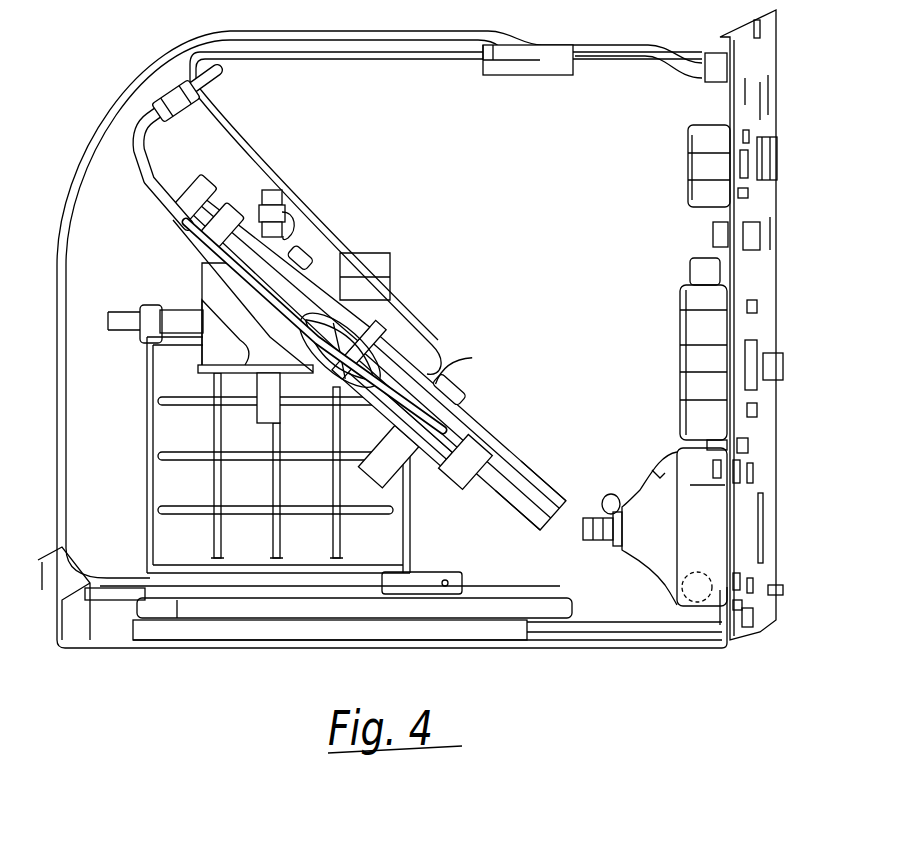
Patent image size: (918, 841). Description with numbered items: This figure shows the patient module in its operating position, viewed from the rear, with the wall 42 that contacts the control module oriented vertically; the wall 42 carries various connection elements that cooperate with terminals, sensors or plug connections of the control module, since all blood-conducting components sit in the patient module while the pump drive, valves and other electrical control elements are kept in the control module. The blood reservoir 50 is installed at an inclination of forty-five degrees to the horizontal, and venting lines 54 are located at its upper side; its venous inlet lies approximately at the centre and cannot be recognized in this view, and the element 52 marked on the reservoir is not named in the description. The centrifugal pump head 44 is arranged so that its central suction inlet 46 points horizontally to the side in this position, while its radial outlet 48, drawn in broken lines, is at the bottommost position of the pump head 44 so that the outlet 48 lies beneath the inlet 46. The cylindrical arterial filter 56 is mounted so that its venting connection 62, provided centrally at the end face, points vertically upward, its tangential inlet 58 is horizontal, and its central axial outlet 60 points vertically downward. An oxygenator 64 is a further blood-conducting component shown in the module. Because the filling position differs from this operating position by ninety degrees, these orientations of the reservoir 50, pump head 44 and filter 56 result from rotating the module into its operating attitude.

The wall 42 is at (765, 435).
The centrifugal pump head 44 is at (693, 540).
The central suction inlet 46 is at (593, 537).
The radial outlet 48 is at (692, 600).
The blood reservoir 50 is at (418, 405).
The tube end 52 is at (530, 515).
The venting lines 54 is at (167, 100).
The arterial filter 56 is at (223, 317).
The tangential inlet 58 is at (370, 262).
The central axial outlet 60 is at (272, 413).
The venting connection 62 is at (282, 214).
The oxygenator 64 is at (182, 487).